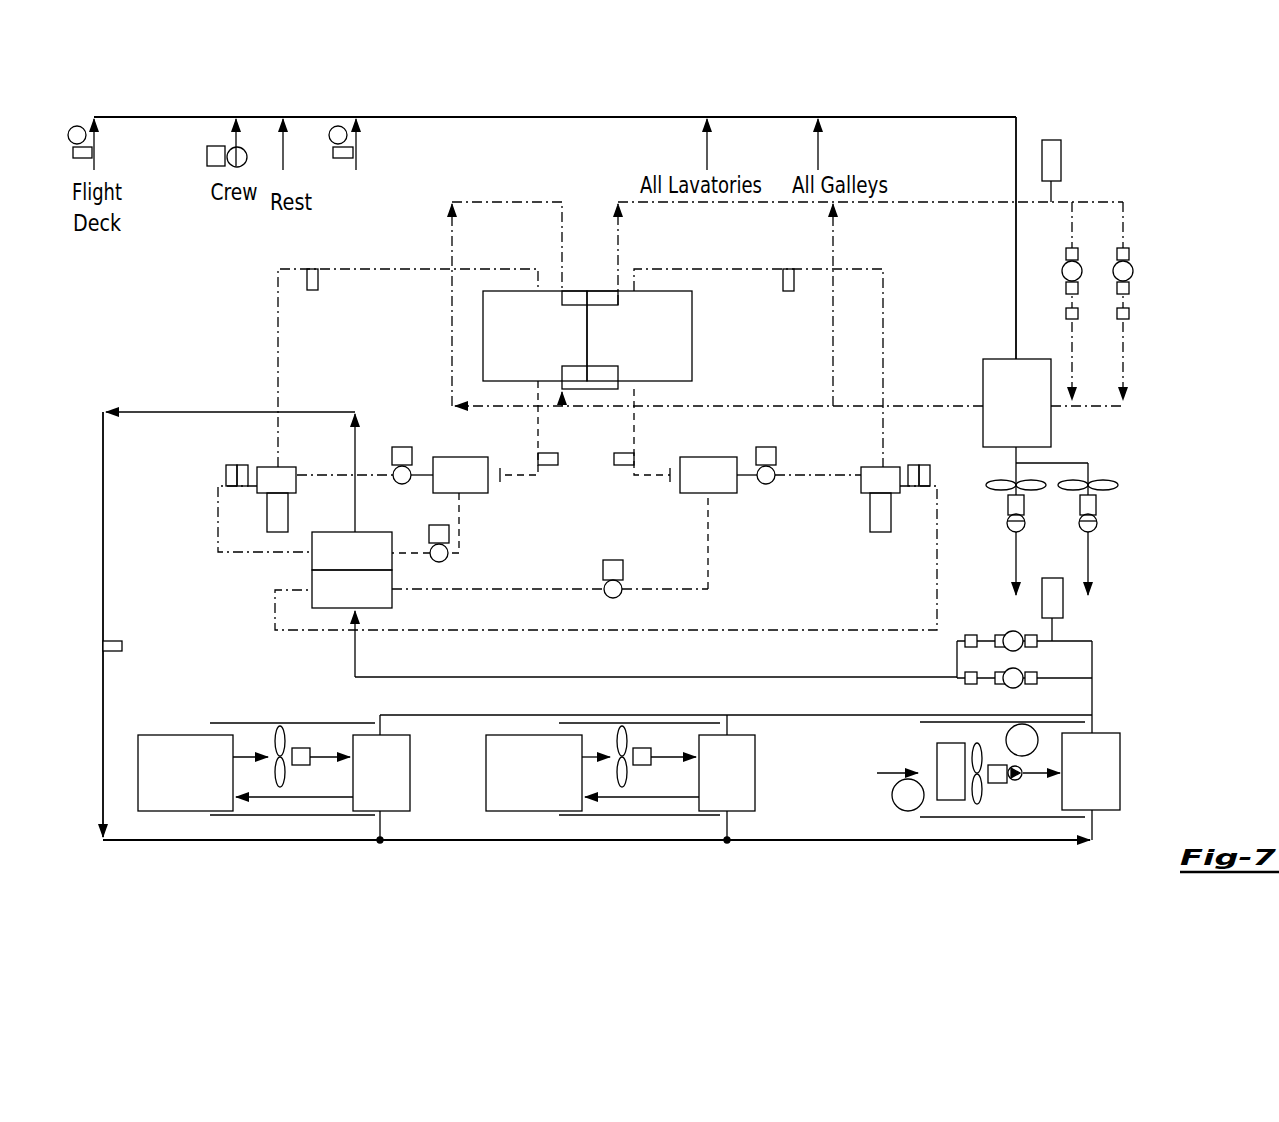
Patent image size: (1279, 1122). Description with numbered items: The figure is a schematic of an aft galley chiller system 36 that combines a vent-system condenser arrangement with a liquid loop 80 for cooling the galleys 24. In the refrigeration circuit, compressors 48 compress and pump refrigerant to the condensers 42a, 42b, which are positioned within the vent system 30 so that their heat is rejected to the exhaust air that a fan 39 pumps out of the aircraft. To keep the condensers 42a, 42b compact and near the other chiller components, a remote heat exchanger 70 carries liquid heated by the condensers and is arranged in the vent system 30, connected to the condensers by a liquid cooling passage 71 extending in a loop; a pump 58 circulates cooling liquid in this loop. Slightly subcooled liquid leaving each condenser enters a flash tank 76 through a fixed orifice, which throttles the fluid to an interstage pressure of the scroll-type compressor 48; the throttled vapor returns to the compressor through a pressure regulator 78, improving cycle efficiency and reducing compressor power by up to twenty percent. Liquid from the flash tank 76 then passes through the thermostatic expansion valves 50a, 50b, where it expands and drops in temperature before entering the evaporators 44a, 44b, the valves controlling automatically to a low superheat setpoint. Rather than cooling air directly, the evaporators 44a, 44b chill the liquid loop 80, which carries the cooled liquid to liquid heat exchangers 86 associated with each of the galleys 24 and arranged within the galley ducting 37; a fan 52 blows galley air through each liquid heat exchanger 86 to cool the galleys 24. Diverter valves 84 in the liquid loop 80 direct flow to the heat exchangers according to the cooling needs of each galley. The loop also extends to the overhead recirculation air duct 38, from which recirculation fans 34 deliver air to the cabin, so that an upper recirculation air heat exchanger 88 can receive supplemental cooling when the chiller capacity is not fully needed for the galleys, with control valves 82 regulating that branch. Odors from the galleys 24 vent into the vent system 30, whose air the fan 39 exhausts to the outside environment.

The galleys 24 is at (178, 811).
The vent system 30 is at (650, 114).
The recirculation fans 34 is at (997, 783).
The galley chiller system 36 is at (186, 349).
The ducting 37 is at (315, 815).
The overhead recirculation air duct 38 is at (965, 817).
The fan 39 is at (1025, 531).
The condenser 42a is at (483, 335).
The condenser 42b is at (692, 340).
The evaporator 44a is at (312, 578).
The evaporator 44b is at (312, 560).
The compressor 48 is at (272, 467).
The expansion valve 50a is at (613, 560).
The expansion valve 50b is at (429, 532).
The fan 52 is at (299, 748).
The pump 58 is at (1083, 263).
The heat exchanger 70 is at (993, 359).
The liquid cooling passage 71 is at (913, 210).
The flash tank 76 is at (478, 493).
The pressure regulator 78 is at (402, 447).
The liquid loop 80 is at (100, 606).
The control valves 82 is at (1010, 668).
The diverter valves 84 is at (383, 838).
The liquid heat exchangers 86 is at (410, 780).
The upper recirculation air heat exchanger 88 is at (1120, 762).